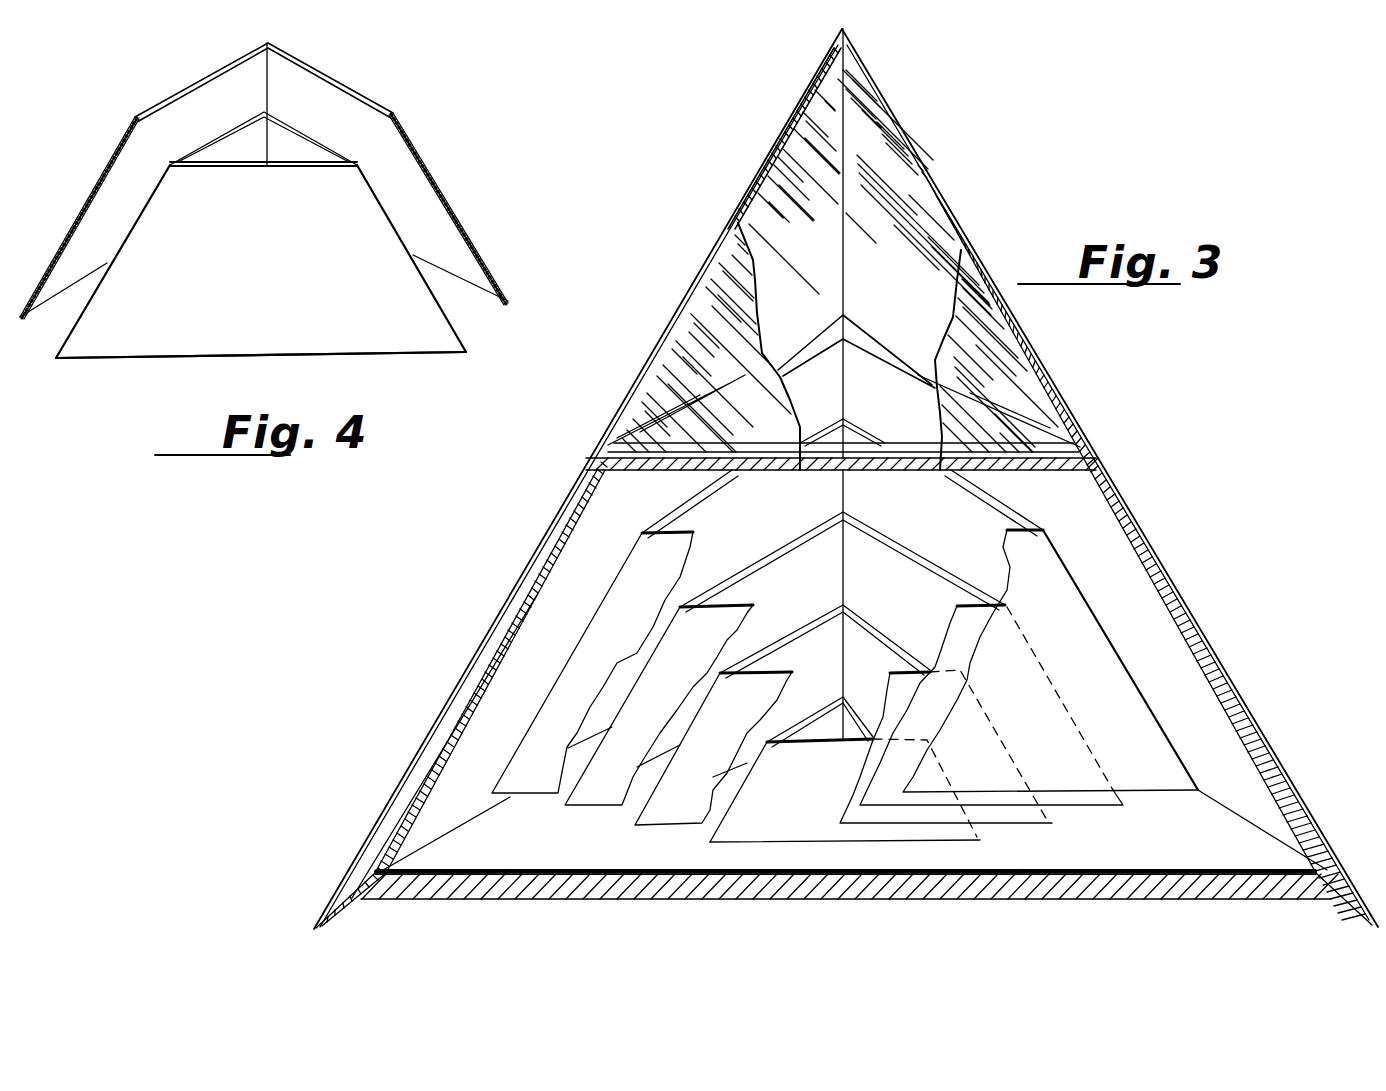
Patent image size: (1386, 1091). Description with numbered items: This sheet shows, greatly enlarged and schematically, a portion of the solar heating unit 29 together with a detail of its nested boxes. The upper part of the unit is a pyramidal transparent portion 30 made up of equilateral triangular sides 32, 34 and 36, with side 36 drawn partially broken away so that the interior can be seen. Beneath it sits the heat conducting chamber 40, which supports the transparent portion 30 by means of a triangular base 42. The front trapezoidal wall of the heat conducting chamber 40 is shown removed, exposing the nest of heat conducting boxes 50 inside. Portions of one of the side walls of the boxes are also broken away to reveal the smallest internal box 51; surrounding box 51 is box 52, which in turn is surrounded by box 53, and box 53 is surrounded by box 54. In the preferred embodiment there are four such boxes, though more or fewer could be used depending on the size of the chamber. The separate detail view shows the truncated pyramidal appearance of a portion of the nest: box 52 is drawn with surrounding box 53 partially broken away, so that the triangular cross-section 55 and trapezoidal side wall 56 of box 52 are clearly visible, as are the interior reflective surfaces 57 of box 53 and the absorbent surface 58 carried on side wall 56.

In FIG. 3, the solar heating unit 29 is at (1150, 519).
In FIG. 3, the transparent portion 30 is at (945, 176).
In FIG. 3, the equilateral triangular side 32 is at (787, 195).
In FIG. 3, the equilateral triangular side 34 is at (918, 250).
In FIG. 3, the equilateral triangular side 36 is at (693, 338).
In FIG. 3, the heat conducting chamber 40 is at (1194, 588).
In FIG. 3, the triangular base 42 is at (1098, 460).
In FIG. 3, the nest of heat conducting boxes 50 is at (1160, 696).
In FIG. 3, the smallest internal box 51 is at (744, 820).
In FIG. 3, the box 52 is at (668, 808).
In FIG. 4, the box 52 is at (387, 353).
In FIG. 3, the box 53 is at (587, 793).
In FIG. 3, the box 54 is at (572, 670).
In FIG. 4, the triangular cross-section 55 is at (305, 130).
In FIG. 4, the trapezoidal side wall 56 is at (457, 333).
In FIG. 4, the interior reflective surfaces 57 is at (160, 137).
In FIG. 4, the absorbent surface 58 is at (152, 330).